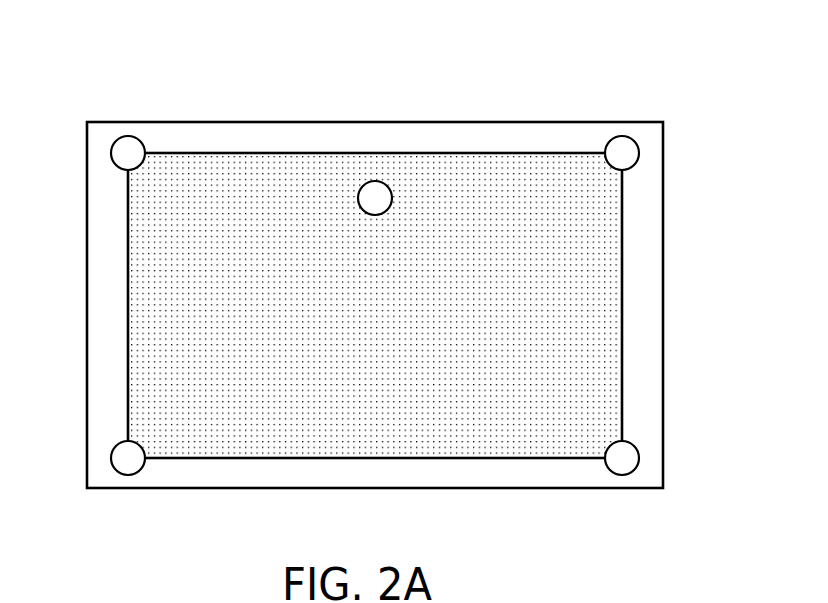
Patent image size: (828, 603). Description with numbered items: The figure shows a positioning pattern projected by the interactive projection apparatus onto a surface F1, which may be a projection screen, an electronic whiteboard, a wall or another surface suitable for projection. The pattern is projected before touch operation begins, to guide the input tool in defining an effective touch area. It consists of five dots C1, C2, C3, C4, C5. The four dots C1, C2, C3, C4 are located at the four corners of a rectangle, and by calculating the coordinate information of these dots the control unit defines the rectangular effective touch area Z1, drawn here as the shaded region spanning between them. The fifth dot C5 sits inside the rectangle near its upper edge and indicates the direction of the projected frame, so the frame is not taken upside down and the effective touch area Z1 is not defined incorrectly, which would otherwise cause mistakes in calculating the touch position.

The surface F1 is at (663, 234).
The effective touch area Z1 is at (600, 305).
The dot C1 is at (129, 136).
The dot C2 is at (621, 136).
The dot C3 is at (111, 459).
The dot C4 is at (639, 459).
The dot C5 is at (378, 181).